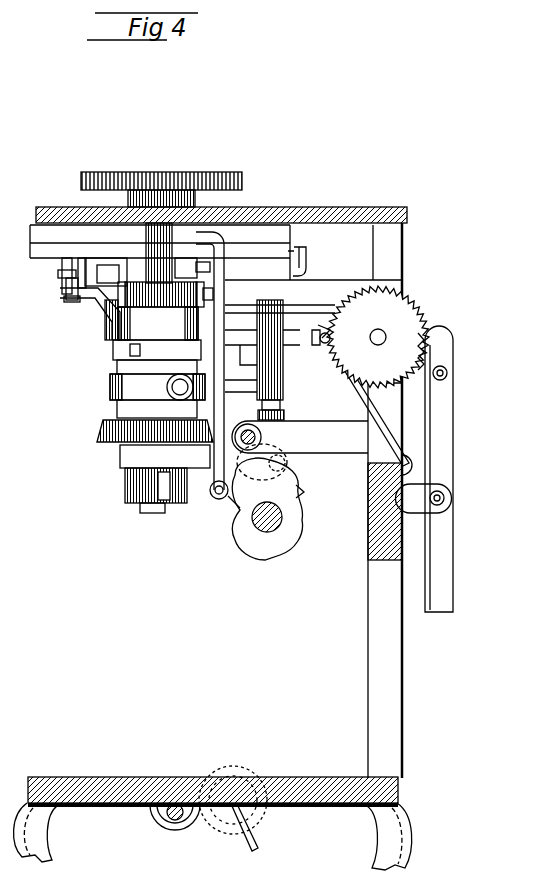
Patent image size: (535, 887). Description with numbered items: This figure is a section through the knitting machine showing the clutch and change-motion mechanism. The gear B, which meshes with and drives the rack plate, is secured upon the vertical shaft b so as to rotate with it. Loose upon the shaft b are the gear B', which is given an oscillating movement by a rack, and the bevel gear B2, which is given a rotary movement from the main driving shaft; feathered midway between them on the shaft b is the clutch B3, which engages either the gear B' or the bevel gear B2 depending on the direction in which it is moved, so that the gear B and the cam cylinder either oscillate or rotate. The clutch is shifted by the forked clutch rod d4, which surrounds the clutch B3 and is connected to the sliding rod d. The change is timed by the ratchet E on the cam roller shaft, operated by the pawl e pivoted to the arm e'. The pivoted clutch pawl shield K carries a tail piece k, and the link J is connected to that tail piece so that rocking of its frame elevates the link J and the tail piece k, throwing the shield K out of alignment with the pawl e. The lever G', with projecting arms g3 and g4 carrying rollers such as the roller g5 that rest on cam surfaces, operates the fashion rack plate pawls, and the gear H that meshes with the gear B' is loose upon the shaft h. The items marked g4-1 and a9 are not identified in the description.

The gear B is at (176, 184).
The roller g5 is at (92, 267).
The projecting arm g3 is at (192, 260).
The lever G' is at (62, 285).
The projecting arm g4 is at (100, 296).
The arm extension g4-1 is at (205, 277).
The gear B' is at (151, 311).
The shaft h is at (118, 340).
The clutch B3 is at (112, 372).
The bevel gear B2 is at (108, 438).
The vertical shaft b is at (168, 511).
The link J is at (212, 484).
The tail piece k is at (235, 510).
The clutch rod d4 is at (262, 350).
The rod d is at (283, 409).
The arm e' is at (300, 437).
The pawl e is at (282, 462).
The clutch pawl shield K is at (306, 493).
The ratchet E is at (303, 519).
The roller a9 is at (165, 818).